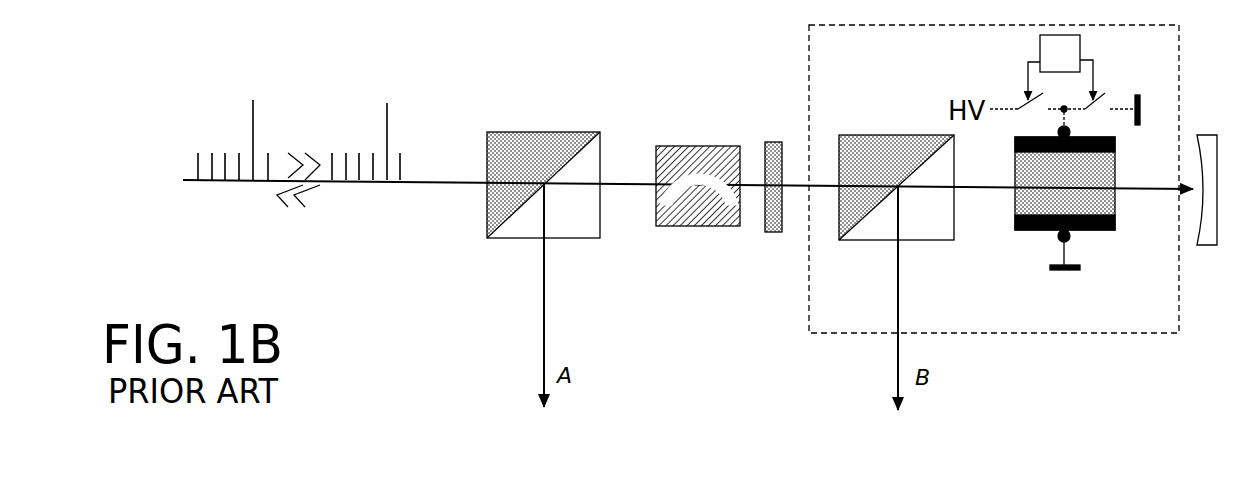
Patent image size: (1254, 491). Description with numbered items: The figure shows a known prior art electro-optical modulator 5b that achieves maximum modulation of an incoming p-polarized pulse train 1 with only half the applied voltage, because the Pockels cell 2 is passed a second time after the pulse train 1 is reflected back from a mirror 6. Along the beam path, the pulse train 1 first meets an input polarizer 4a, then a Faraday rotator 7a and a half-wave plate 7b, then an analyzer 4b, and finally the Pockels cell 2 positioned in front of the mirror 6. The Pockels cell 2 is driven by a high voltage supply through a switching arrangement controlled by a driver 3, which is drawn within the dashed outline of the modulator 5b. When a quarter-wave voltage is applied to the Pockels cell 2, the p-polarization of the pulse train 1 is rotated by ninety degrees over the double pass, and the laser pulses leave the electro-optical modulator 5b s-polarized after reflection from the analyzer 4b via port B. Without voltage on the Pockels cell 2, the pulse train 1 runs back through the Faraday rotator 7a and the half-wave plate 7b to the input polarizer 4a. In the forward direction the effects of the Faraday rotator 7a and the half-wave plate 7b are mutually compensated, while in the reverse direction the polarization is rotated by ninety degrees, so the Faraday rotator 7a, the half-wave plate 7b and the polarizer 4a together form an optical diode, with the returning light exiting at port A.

The pulse train 1 is at (340, 187).
The input polarizer 4a is at (574, 223).
The Faraday rotator 7a is at (710, 227).
The half-wave plate 7b is at (773, 235).
The analyzer 4b is at (932, 232).
The driver / control unit 3 is at (1060, 67).
The Pockels cell 2 is at (1086, 203).
The mirror 6 is at (1207, 208).
The electro-optical modulator 5b is at (1021, 219).